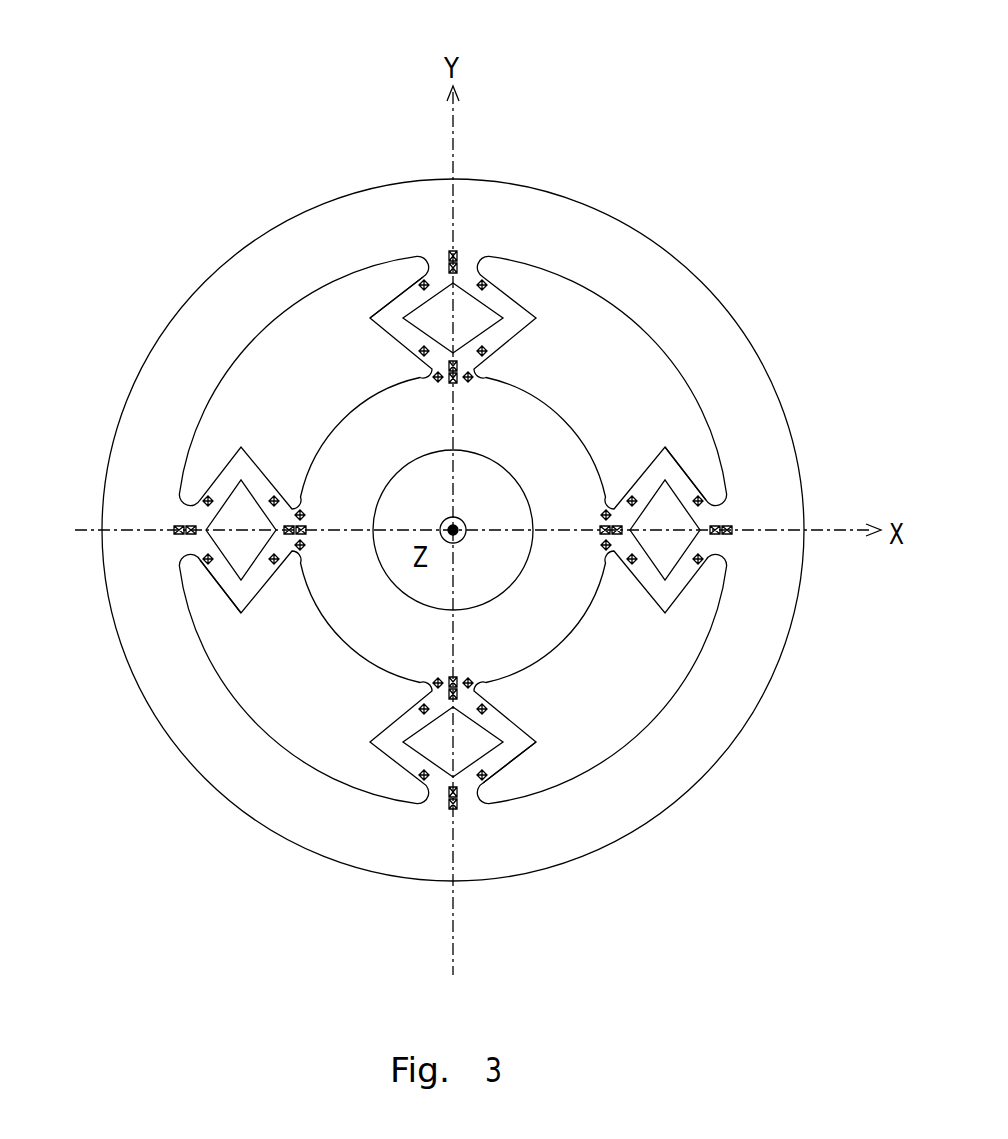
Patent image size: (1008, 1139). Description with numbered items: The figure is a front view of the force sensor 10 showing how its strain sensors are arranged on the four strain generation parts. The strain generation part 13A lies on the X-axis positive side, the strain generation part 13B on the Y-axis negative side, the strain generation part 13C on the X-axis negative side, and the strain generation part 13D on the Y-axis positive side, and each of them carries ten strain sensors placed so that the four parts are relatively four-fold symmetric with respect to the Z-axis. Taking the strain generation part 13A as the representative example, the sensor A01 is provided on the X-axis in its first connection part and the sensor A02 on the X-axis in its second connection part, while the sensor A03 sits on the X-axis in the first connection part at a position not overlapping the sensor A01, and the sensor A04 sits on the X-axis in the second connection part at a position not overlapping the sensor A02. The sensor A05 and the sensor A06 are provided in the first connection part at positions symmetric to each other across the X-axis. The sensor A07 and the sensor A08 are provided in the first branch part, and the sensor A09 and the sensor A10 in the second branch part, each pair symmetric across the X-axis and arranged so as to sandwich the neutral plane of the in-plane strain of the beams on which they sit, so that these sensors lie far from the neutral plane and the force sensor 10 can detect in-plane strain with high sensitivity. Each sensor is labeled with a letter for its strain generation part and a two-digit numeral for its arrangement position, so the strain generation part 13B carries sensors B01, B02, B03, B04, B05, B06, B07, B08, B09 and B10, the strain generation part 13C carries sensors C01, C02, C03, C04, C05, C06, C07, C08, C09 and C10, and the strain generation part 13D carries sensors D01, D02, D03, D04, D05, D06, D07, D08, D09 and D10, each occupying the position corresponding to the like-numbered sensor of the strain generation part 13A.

The force sensor 10 is at (272, 71).
The strain generation part 13A is at (673, 456).
The strain generation part 13B is at (505, 767).
The strain generation part 13C is at (215, 592).
The strain generation part 13D is at (387, 300).
The sensor A01 is at (605, 526).
The sensor A02 is at (730, 530).
The sensor A03 is at (620, 534).
The sensor A04 is at (701, 503).
The sensor A05 is at (607, 512).
The sensor A06 is at (604, 548).
The sensor A07 is at (668, 478).
The sensor A08 is at (633, 563).
The sensor A09 is at (703, 561).
The sensor A10 is at (704, 495).
The sensor B01 is at (456, 680).
The sensor B02 is at (455, 809).
The sensor B03 is at (452, 700).
The sensor B04 is at (483, 779).
The sensor B05 is at (471, 684).
The sensor B06 is at (436, 684).
The sensor B07 is at (503, 744).
The sensor B08 is at (422, 710).
The sensor B09 is at (423, 779).
The sensor B10 is at (489, 790).
The sensor C01 is at (303, 534).
The sensor C02 is at (186, 534).
The sensor C03 is at (176, 530).
The sensor C04 is at (205, 505).
The sensor C05 is at (300, 549).
The sensor C06 is at (300, 511).
The sensor C07 is at (240, 586).
The sensor C08 is at (273, 498).
The sensor C09 is at (201, 500).
The sensor C10 is at (201, 565).
The sensor D01 is at (449, 381).
The sensor D02 is at (451, 251).
The sensor D03 is at (456, 361).
The sensor D04 is at (422, 282).
The sensor D05 is at (436, 375).
The sensor D06 is at (470, 380).
The sensor D07 is at (395, 322).
The sensor D08 is at (486, 352).
The sensor D09 is at (485, 282).
The sensor D10 is at (381, 300).